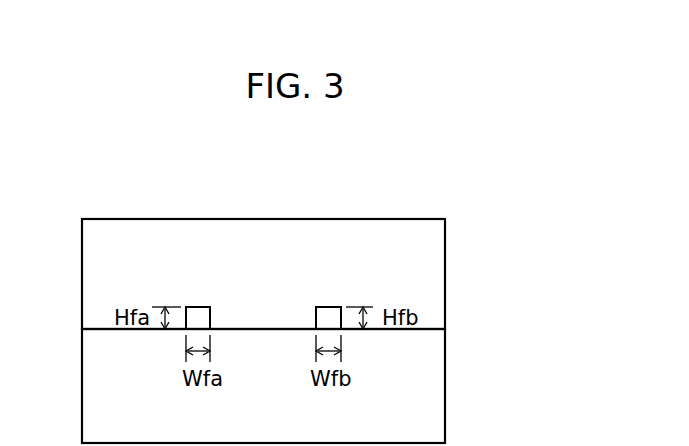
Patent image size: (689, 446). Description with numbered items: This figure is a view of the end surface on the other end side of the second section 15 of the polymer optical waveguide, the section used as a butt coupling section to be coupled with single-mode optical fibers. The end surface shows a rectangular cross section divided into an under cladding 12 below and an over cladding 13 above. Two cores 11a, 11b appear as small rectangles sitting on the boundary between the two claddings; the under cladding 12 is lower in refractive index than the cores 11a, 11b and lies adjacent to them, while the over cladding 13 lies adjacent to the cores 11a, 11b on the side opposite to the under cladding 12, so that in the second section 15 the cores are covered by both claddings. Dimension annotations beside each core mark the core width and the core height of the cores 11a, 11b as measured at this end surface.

The second section 15 is at (299, 296).
The over cladding 13 is at (428, 273).
The under cladding 12 is at (427, 371).
The core 11a is at (197, 305).
The core 11b is at (327, 305).